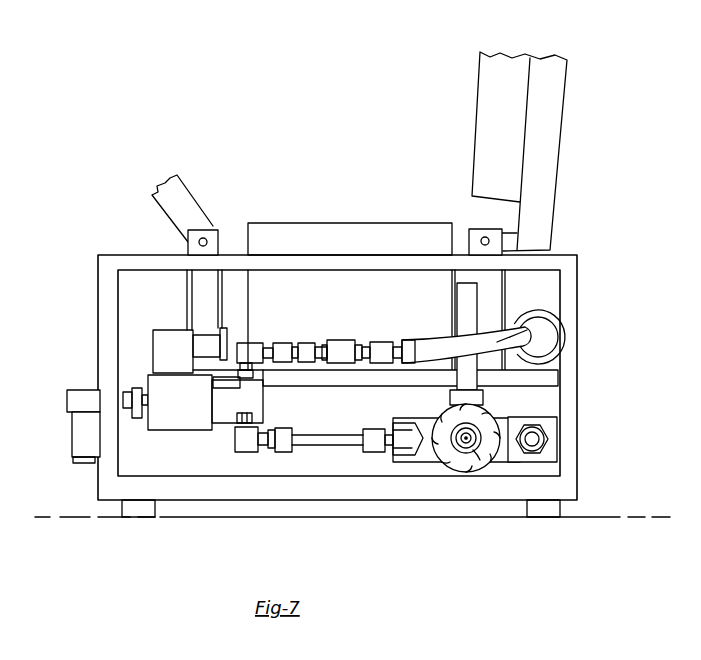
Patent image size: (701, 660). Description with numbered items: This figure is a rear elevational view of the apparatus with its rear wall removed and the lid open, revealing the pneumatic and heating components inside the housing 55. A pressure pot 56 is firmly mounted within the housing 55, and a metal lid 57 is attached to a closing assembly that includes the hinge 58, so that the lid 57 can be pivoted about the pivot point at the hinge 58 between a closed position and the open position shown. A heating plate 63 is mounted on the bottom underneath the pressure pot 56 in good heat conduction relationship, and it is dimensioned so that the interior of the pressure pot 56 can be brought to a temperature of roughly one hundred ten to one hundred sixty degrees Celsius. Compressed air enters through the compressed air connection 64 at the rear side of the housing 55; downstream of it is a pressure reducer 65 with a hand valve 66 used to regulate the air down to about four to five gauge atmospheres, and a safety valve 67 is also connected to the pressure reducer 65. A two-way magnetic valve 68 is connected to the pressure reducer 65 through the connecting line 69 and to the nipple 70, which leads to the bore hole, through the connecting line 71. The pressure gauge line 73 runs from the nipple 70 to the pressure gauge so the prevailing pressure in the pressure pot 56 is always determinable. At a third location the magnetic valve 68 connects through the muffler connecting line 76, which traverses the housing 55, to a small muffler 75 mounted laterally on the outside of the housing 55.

The housing 55 is at (95, 278).
The pressure pot 56 is at (277, 231).
The lid 57 is at (478, 134).
The hinge 58 is at (188, 242).
The heating plate 63 is at (380, 371).
The compressed air connection 64 is at (540, 440).
The pressure reducer 65 is at (434, 462).
The hand valve 66 is at (478, 458).
The safety valve 67 is at (463, 306).
The two-way magnetic valve 68 is at (205, 379).
The connecting line 69 is at (329, 438).
The nipple 70 is at (341, 340).
The connecting line 71 is at (298, 343).
The pressure gauge line 73 is at (540, 305).
The small muffler 75 is at (84, 425).
The muffler connecting line 76 is at (128, 392).